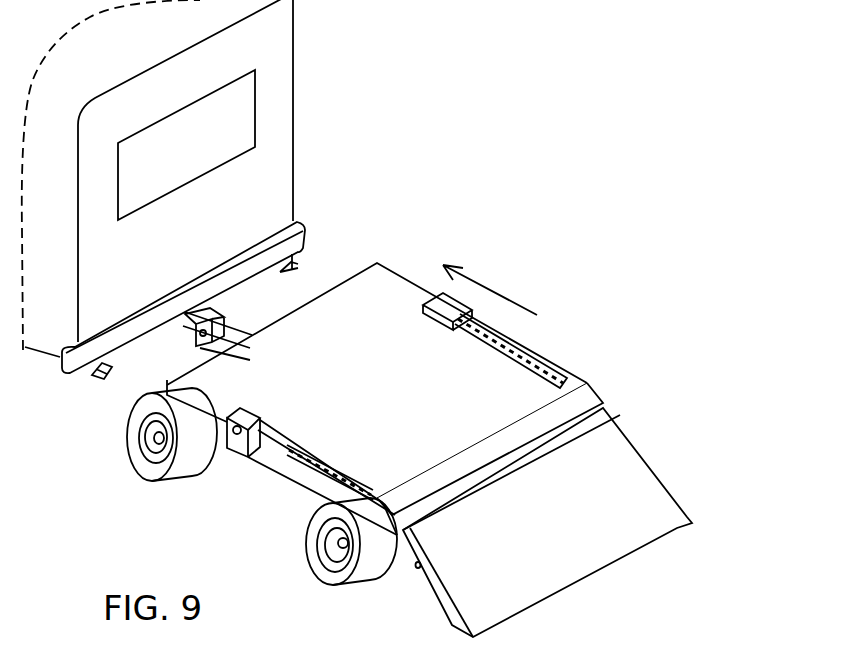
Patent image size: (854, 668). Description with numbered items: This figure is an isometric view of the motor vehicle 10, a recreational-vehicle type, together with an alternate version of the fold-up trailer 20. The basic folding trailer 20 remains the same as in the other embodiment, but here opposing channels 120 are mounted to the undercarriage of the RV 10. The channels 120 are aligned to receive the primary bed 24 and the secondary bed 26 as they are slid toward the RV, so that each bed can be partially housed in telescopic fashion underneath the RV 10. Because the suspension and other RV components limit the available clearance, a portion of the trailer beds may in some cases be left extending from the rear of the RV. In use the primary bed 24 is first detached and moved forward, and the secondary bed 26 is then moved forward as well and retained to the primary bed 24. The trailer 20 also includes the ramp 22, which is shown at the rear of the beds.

The motor vehicle 10 is at (293, 122).
The opposing channels 120 is at (182, 318).
The fold-up trailer 20 is at (226, 390).
The ramp 22 is at (642, 492).
The primary bed 24 is at (503, 383).
The secondary bed 26 is at (602, 413).